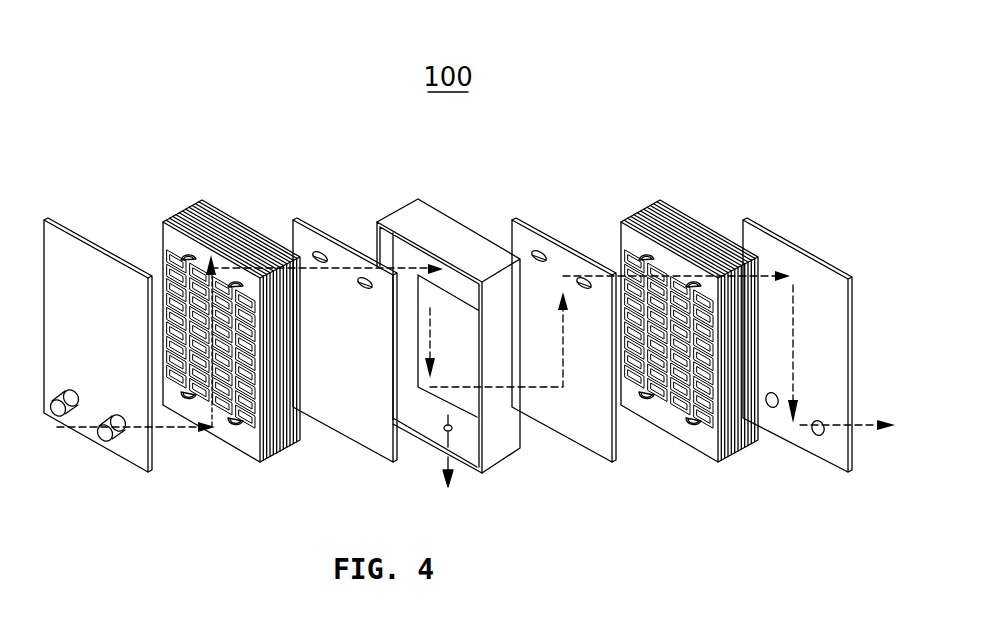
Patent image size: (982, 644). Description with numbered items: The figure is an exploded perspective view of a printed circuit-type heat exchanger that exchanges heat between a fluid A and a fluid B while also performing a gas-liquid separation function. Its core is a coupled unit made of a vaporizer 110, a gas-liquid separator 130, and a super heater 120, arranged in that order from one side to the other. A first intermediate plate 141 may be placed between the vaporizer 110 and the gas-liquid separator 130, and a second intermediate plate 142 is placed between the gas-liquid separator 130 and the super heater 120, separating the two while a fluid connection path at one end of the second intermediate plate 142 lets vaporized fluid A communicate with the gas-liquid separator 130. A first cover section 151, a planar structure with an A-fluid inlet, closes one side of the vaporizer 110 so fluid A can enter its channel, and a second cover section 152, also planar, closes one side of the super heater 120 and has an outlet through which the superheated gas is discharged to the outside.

The vaporizer 110 is at (188, 218).
The super heater 120 is at (649, 218).
The gas-liquid separator 130 is at (402, 216).
The first intermediate plate 141 is at (298, 216).
The second intermediate plate 142 is at (516, 216).
The first cover section 151 is at (49, 214).
The second cover section 152 is at (745, 214).